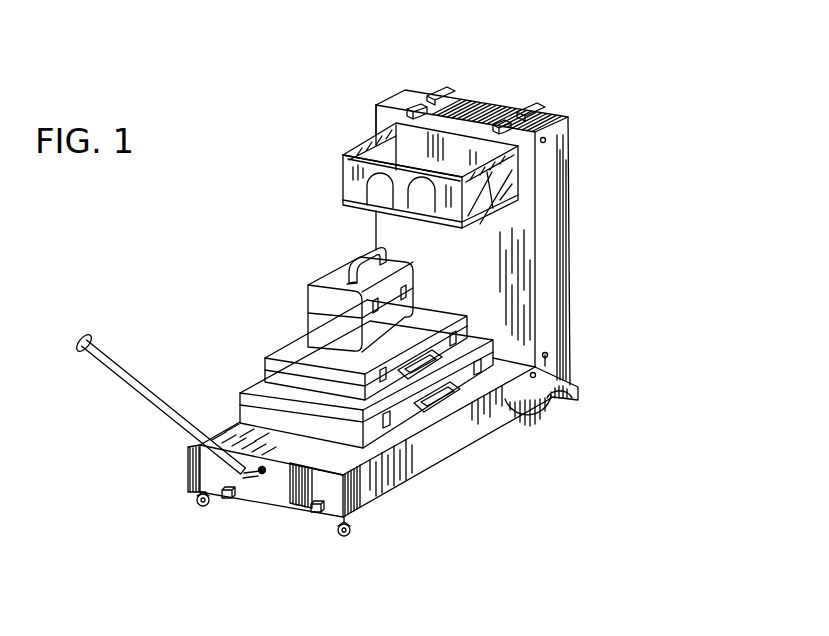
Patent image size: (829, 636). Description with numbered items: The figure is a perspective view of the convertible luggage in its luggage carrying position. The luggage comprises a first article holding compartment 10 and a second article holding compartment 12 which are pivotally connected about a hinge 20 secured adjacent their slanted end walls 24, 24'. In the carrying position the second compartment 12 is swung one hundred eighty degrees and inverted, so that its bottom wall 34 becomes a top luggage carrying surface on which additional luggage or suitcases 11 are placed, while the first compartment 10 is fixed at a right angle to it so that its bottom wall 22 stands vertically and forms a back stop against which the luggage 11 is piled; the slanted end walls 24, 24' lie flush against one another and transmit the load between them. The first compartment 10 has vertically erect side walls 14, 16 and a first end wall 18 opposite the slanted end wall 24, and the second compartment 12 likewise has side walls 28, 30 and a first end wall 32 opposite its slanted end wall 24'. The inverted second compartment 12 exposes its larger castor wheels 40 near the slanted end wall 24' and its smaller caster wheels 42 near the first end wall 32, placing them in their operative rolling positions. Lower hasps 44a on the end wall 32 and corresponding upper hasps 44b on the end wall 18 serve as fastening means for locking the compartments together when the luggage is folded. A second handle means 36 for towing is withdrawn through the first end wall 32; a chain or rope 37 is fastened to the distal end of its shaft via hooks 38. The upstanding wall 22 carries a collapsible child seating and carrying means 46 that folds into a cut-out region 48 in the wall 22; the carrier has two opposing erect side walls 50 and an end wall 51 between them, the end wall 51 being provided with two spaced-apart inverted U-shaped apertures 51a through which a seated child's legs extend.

The first article holding compartment 10 is at (588, 240).
The additional luggage or suitcases 11 is at (318, 278).
The second article holding compartment 12 is at (415, 493).
The side wall 14 is at (553, 206).
The side wall 16 is at (377, 113).
The first end wall 18 is at (493, 107).
The hinge 20 is at (572, 388).
The bottom wall 22 is at (523, 262).
The slanted end wall 24 is at (591, 353).
The slanted end wall 24' is at (583, 408).
The side wall 28 is at (468, 440).
The side wall 30 is at (217, 427).
The first end wall 32 is at (330, 470).
The bottom wall 34 is at (310, 460).
The second handle means 36 is at (137, 397).
The chain or rope 37 is at (272, 445).
The hooks 38 is at (256, 477).
The castor wheels 40 is at (527, 425).
The castor wheels 42 is at (195, 497).
The lower hasps 44a is at (227, 500).
The upper hasps 44b is at (438, 90).
The collapsible small child seating and carrying means 46 is at (415, 150).
The cut-out region 48 is at (453, 147).
The side walls 50 is at (378, 145).
The end wall 51 is at (350, 183).
The inverted U-shaped apertures 51a is at (378, 184).